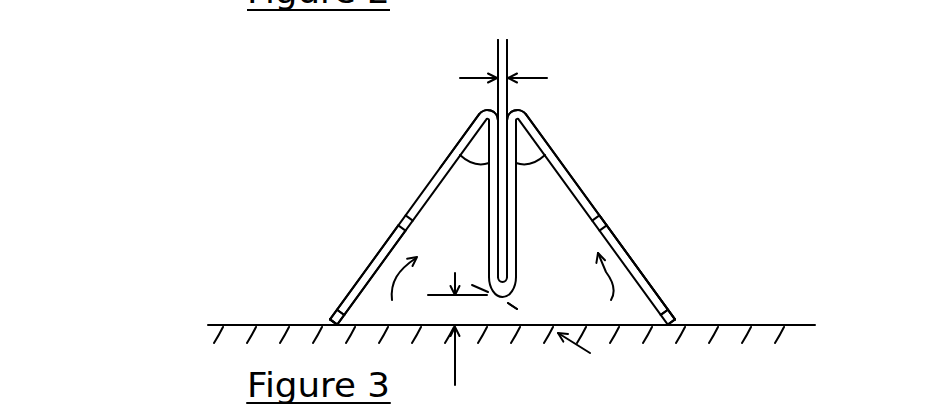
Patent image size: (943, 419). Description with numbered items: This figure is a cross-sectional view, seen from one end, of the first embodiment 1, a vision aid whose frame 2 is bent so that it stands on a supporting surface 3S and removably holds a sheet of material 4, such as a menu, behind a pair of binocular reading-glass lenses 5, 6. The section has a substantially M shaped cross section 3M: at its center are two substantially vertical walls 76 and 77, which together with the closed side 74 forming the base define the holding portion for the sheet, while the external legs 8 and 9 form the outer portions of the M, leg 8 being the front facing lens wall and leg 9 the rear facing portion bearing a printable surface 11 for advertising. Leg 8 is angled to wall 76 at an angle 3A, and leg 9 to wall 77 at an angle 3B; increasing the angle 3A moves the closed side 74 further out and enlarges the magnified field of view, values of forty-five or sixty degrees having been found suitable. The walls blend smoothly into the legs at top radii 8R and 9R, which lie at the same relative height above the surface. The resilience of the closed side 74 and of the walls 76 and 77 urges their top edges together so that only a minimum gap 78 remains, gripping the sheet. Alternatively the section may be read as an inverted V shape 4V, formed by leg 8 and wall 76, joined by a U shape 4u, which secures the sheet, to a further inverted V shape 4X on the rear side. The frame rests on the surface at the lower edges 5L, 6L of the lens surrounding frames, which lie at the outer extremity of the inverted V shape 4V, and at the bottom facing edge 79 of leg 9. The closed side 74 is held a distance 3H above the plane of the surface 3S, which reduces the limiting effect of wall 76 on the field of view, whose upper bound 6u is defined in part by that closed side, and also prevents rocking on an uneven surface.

The first embodiment 1 is at (299, 135).
The frame 2 is at (563, 166).
The angle 3A is at (472, 174).
The angle 3B is at (535, 174).
The distance 3H is at (458, 344).
The M shaped cross section 3M is at (440, 156).
The surface 3S is at (240, 325).
The sheet of material 4 is at (490, 53).
The holding portion 4u is at (502, 23).
The inverted V shape 4V is at (393, 291).
The inverted V shape 4X is at (600, 303).
The lens 5 is at (372, 246).
The lens 6 is at (358, 253).
The lower edge 5L is at (322, 318).
The lower edge 6L is at (322, 322).
The upper bound 6u is at (543, 327).
The leg 8 is at (419, 196).
The top radius 8R is at (485, 111).
The leg 9 is at (603, 220).
The top radius 9R is at (520, 103).
The printable surface 11 is at (630, 247).
The closed side 74 is at (505, 300).
The wall 76 is at (488, 224).
The wall 77 is at (517, 217).
The minimum gap 78 is at (511, 64).
The edge 79 is at (683, 323).